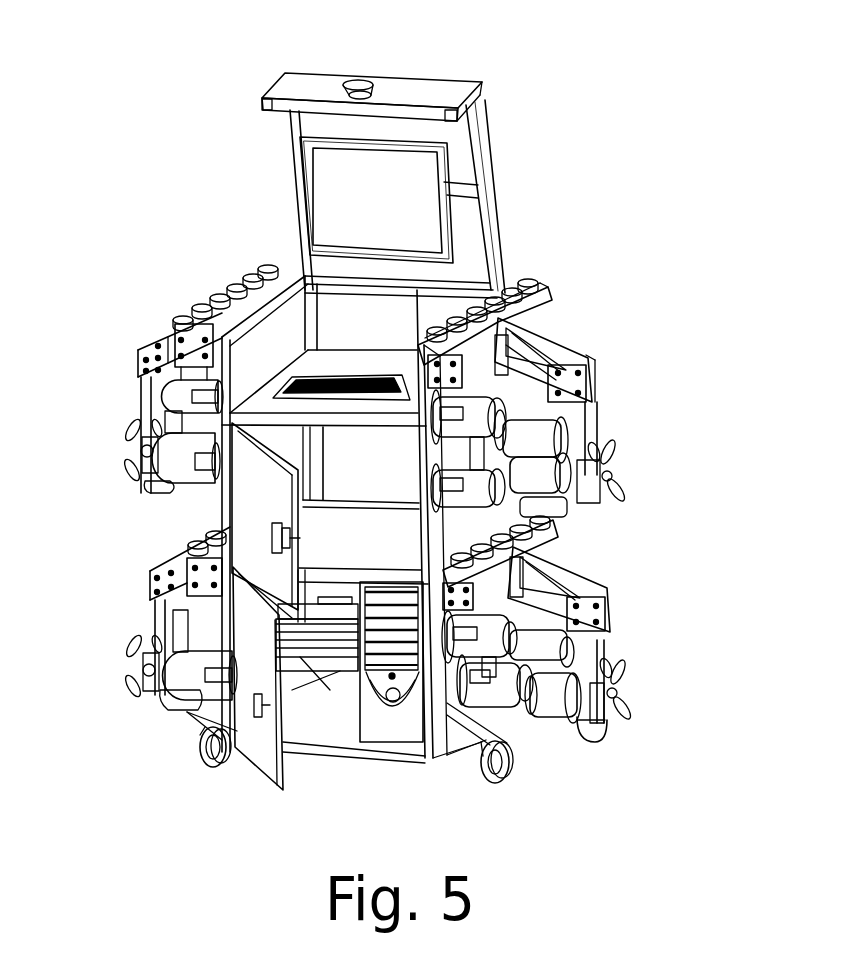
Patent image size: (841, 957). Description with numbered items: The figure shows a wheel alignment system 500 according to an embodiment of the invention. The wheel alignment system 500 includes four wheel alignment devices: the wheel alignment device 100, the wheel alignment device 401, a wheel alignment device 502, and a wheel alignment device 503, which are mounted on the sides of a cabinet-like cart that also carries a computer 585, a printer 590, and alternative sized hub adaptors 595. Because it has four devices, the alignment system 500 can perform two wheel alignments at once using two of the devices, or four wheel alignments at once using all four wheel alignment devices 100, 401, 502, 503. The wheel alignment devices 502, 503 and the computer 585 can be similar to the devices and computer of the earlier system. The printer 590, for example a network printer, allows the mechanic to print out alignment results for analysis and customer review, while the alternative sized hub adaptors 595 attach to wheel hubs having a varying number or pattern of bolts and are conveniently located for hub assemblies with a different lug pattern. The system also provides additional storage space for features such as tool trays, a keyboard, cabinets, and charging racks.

The wheel alignment system 500 is at (557, 80).
The wheel alignment device 401 is at (100, 327).
The wheel alignment device 100 is at (598, 342).
The wheel alignment device 502 is at (553, 538).
The wheel alignment device 503 is at (152, 620).
The alternative sized hub adaptors 595 is at (553, 693).
The printer 590 is at (300, 653).
The computer 585 is at (407, 727).